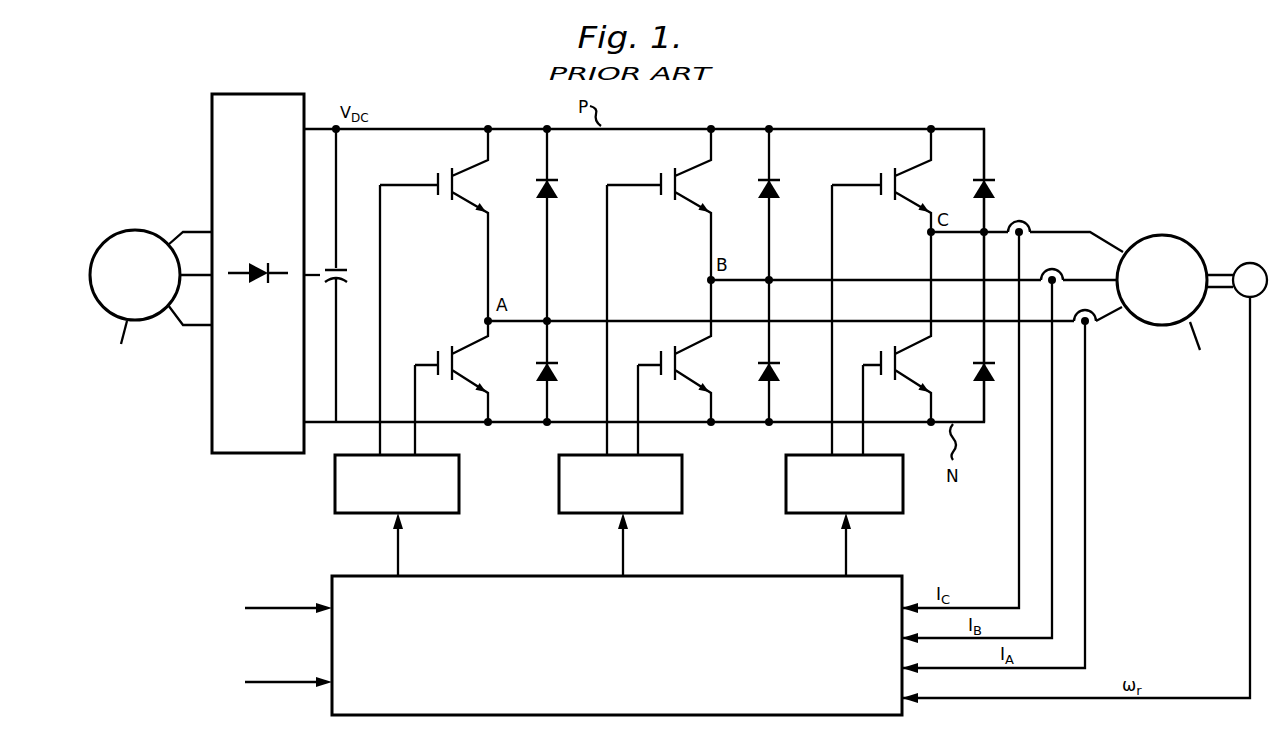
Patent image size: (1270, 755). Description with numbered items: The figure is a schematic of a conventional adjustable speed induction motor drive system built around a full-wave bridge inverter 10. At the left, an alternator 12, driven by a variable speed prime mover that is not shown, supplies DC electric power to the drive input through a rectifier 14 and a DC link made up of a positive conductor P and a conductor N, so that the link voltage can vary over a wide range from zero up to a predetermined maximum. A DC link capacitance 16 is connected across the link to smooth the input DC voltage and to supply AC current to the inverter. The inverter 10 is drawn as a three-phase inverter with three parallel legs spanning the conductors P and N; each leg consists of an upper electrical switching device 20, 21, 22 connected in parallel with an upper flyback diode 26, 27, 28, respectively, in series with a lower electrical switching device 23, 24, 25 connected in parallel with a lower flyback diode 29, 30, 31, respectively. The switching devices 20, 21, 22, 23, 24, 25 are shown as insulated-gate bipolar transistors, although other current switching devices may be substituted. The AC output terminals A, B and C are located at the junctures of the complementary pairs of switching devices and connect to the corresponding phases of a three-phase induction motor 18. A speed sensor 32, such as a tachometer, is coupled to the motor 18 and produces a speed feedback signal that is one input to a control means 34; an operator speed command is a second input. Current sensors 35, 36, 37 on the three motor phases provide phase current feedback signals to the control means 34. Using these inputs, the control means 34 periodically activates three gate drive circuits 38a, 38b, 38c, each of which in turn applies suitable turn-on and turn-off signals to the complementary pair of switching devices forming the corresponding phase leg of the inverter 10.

The full-wave bridge inverter 10 is at (950, 128).
The alternator 12 is at (136, 229).
The rectifier 14 is at (255, 92).
The DC link capacitance 16 is at (341, 268).
The three-phase induction motor 18 is at (1160, 235).
The upper electrical switching device 20 is at (475, 162).
The upper electrical switching device 21 is at (698, 162).
The upper electrical switching device 22 is at (918, 162).
The lower electrical switching device 23 is at (474, 347).
The lower electrical switching device 24 is at (697, 350).
The lower electrical switching device 25 is at (917, 350).
The upper flyback diode 26 is at (556, 191).
The upper flyback diode 27 is at (778, 191).
The upper flyback diode 28 is at (993, 191).
The lower flyback diode 29 is at (556, 374).
The lower flyback diode 30 is at (778, 374).
The lower flyback diode 31 is at (983, 376).
The speed sensor 32 is at (1243, 263).
The control means 34 is at (877, 575).
The current sensor 35 is at (1104, 313).
The current sensor 36 is at (996, 442).
The current sensor 37 is at (981, 399).
The gate drive circuit 38a is at (333, 488).
The gate drive circuit 38b is at (558, 488).
The gate drive circuit 38c is at (786, 488).